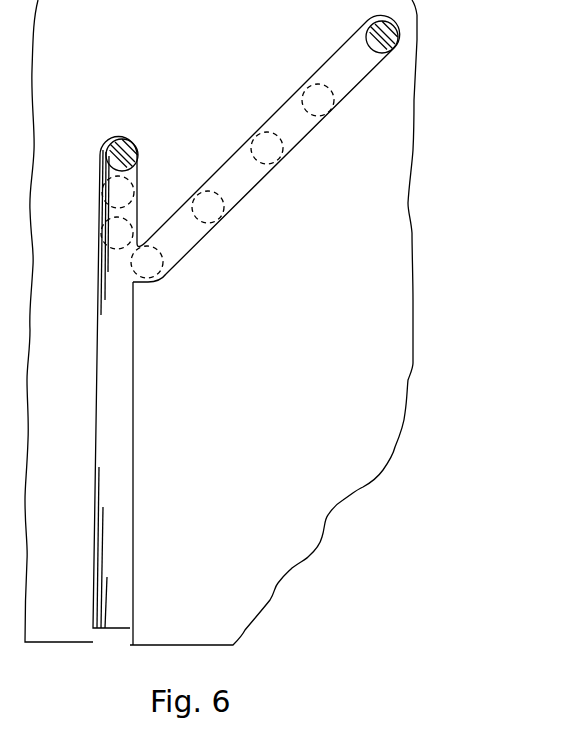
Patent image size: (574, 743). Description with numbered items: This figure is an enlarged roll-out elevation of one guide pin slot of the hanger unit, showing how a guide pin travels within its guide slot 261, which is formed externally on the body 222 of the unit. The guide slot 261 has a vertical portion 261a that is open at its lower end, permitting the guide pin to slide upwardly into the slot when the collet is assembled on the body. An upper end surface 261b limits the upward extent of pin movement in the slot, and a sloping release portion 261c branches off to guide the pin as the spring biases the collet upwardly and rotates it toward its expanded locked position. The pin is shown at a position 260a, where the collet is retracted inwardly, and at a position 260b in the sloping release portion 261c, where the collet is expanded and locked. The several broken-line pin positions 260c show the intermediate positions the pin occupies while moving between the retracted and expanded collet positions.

The block body 222 is at (241, 635).
The guide slot 261 is at (99, 353).
The vertical portion 261a is at (97, 428).
The upper end surface 261b is at (109, 141).
The sloping release portion 261c is at (281, 110).
The pin position 260a is at (128, 158).
The pin position 260b is at (393, 28).
The pin positions 260c is at (240, 228).